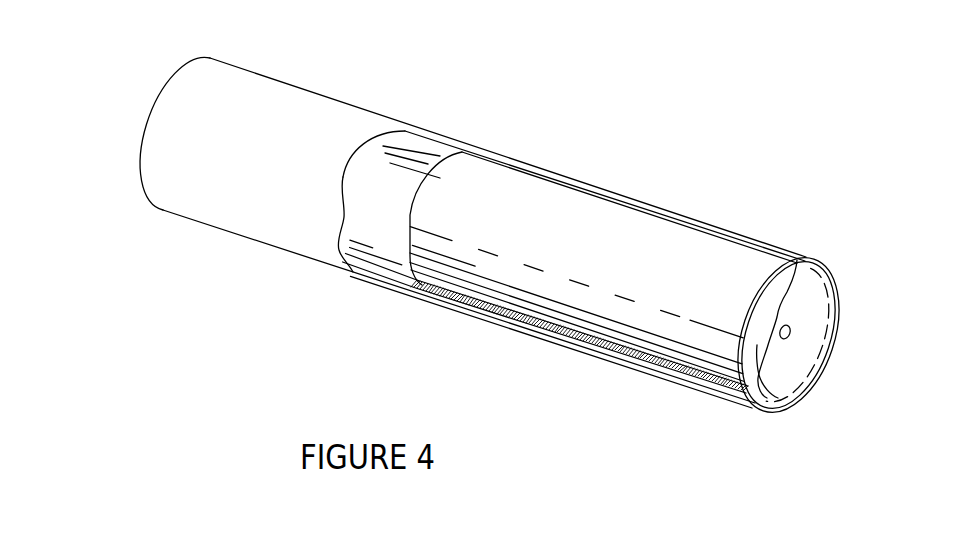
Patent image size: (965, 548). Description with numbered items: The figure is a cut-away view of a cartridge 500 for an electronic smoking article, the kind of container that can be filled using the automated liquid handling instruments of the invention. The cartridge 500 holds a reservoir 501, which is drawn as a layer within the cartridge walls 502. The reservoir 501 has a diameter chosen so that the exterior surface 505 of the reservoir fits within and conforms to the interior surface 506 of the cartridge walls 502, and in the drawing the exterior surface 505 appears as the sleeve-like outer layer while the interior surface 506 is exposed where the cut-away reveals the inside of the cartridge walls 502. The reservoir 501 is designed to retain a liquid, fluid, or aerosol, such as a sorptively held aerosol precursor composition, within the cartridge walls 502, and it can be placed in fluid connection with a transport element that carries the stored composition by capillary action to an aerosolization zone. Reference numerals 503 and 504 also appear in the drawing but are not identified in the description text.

The cartridge 500 is at (505, 97).
The reservoir 501 is at (587, 220).
The cartridge walls 502 is at (782, 240).
The lumen opening 503 is at (767, 388).
The sleeve edge 504 is at (410, 223).
The exterior surface 505 is at (536, 229).
The interior surface 506 is at (397, 220).